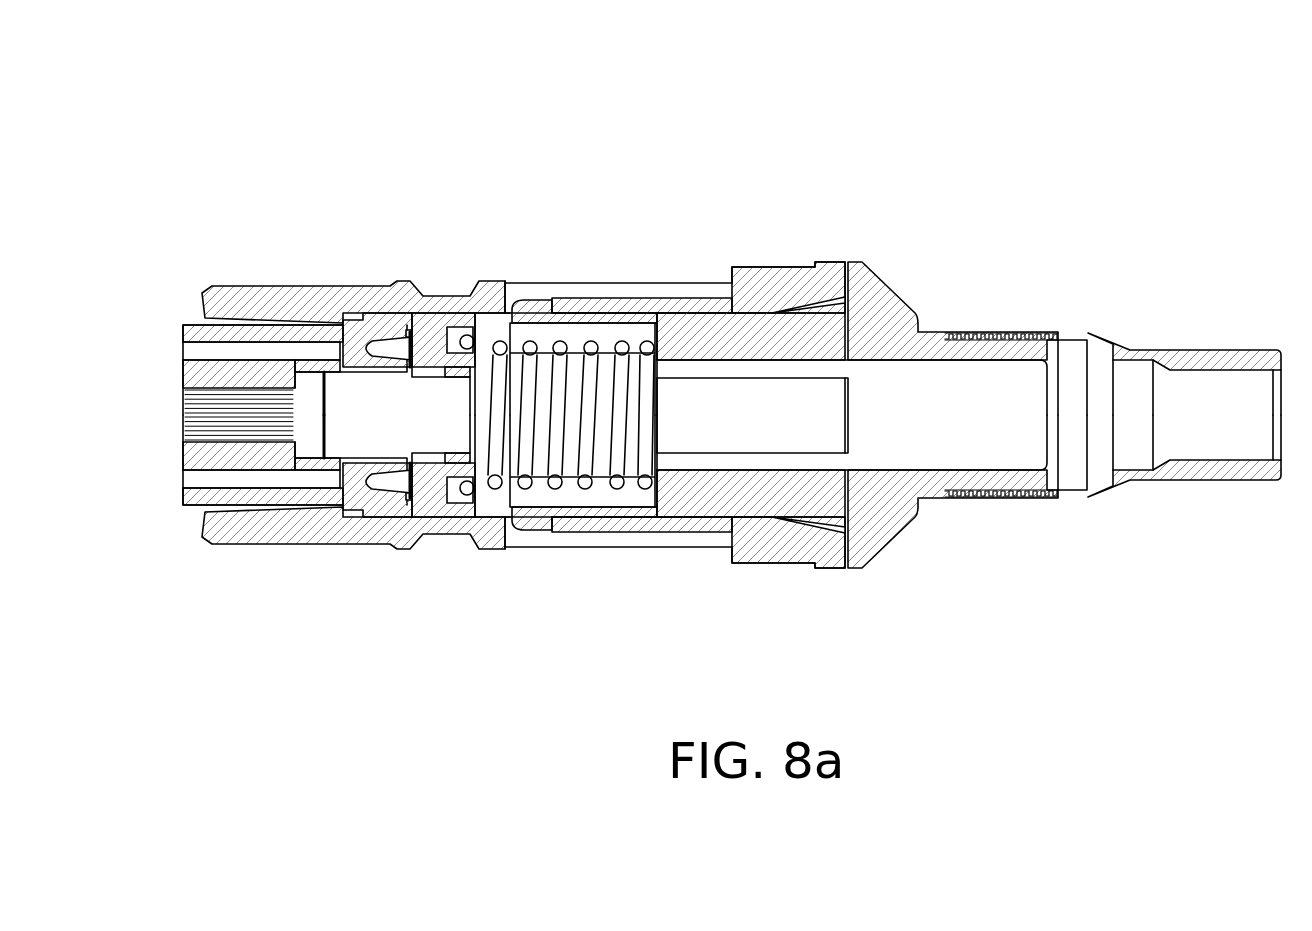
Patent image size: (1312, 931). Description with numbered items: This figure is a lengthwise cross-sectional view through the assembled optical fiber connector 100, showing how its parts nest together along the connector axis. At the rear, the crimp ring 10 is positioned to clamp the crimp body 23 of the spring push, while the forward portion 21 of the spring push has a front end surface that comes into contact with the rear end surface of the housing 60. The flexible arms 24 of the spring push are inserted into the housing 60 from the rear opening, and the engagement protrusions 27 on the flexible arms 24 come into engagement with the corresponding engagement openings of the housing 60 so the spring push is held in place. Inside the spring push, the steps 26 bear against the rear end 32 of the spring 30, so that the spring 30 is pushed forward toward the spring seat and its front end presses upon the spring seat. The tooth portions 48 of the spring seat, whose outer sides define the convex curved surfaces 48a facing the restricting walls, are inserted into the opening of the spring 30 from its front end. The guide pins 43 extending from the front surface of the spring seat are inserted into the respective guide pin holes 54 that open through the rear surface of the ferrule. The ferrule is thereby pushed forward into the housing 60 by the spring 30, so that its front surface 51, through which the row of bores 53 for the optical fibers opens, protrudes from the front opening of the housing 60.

The optical fiber connector 100 is at (593, 137).
The crimp ring 10 is at (1162, 473).
The forward portion 21 is at (867, 282).
The crimp body 23 is at (983, 348).
The flexible arms 24 is at (681, 322).
The steps 26 is at (638, 507).
The engagement protrusions 27 is at (543, 527).
The spring 30 is at (558, 397).
The rear end 32 is at (657, 415).
The guide pins 43 is at (386, 348).
The tooth portions 48 is at (460, 487).
The curved surfaces 48a is at (464, 337).
The front surface 51 is at (183, 464).
The bores 53 is at (196, 398).
The guide pin holes 54 is at (330, 352).
The housing 60 is at (315, 525).